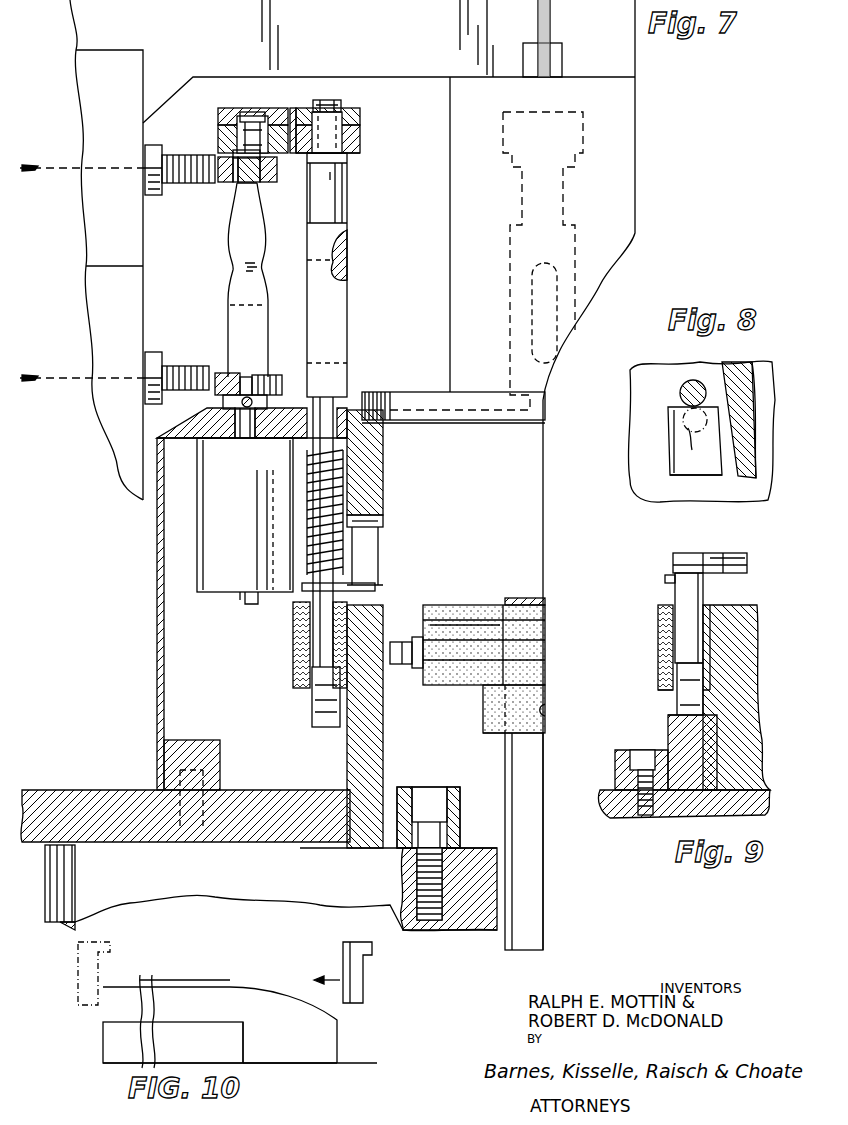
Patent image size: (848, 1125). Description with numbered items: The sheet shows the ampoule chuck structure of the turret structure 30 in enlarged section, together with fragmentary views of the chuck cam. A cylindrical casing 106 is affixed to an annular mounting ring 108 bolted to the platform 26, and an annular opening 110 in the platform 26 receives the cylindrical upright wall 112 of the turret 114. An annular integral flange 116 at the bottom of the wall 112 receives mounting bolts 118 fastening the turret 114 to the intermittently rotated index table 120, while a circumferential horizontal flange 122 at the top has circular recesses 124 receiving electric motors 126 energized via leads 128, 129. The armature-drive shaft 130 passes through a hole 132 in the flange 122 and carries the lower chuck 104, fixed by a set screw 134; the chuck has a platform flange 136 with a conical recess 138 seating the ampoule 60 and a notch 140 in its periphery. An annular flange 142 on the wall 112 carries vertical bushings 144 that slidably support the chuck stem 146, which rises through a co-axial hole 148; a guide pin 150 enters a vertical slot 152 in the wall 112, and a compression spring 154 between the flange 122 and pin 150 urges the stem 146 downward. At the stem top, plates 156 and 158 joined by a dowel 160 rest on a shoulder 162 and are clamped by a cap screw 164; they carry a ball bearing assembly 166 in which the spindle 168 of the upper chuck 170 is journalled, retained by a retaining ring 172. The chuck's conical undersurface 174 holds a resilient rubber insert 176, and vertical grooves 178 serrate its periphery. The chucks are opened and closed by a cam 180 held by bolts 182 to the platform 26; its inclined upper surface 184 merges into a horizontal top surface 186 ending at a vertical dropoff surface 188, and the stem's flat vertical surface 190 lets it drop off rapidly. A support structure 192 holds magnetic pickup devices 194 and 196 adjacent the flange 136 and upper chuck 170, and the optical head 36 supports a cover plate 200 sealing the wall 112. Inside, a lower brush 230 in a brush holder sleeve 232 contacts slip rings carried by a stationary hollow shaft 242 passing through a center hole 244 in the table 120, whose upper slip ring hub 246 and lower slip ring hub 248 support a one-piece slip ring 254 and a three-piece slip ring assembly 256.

In FIG. 7, the platform 26 is at (55, 790).
In FIG. 8, the platform 26 is at (640, 470).
In FIG. 9, the platform 26 is at (668, 812).
In FIG. 7, the cylindrical turret structure 30 is at (156, 650).
In FIG. 7, the optical head 36 is at (636, 172).
In FIG. 7, the ampoule 60 is at (250, 352).
In FIG. 7, the lower chuck 104 is at (222, 401).
In FIG. 7, the cylindrical casing 106 is at (157, 698).
In FIG. 7, the annular mounting ring 108 is at (220, 762).
In FIG. 7, the annular opening 110 is at (347, 792).
In FIG. 7, the cylindrical upright wall 112 is at (374, 758).
In FIG. 8, the cylindrical upright wall 112 is at (748, 478).
In FIG. 9, the cylindrical upright wall 112 is at (738, 640).
In FIG. 7, the turret 114 is at (386, 487).
In FIG. 7, the annular integral flange 116 is at (461, 800).
In FIG. 7, the mounting bolts 118 is at (444, 834).
In FIG. 7, the index table 120 is at (232, 866).
In FIG. 7, the circumferential horizontal flange 122 is at (157, 445).
In FIG. 7, the circular recesses 124 is at (207, 440).
In FIG. 7, the electric motor 126 is at (218, 592).
In FIG. 7, the lead 128 is at (250, 606).
In FIG. 7, the lead 129 is at (243, 606).
In FIG. 7, the armature-drive shaft 130 is at (248, 438).
In FIG. 7, the hole 132 is at (252, 423).
In FIG. 7, the set screw 134 is at (255, 402).
In FIG. 7, the platform flange 136 is at (278, 375).
In FIG. 7, the recess 138 is at (228, 373).
In FIG. 7, the notch 140 is at (240, 382).
In FIG. 7, the annular flange 142 is at (293, 668).
In FIG. 9, the annular flange 142 is at (662, 668).
In FIG. 7, the vertical bushing 144 is at (310, 680).
In FIG. 9, the vertical bushing 144 is at (668, 638).
In FIG. 7, the chuck stem 146 is at (576, 256).
In FIG. 8, the chuck stem 146 is at (682, 392).
In FIG. 9, the chuck stem 146 is at (682, 598).
In FIG. 10, the chuck stem 146 is at (78, 970).
In FIG. 7, the co-axial hole 148 is at (354, 400).
In FIG. 7, the guide pin 150 is at (376, 585).
In FIG. 9, the guide pin 150 is at (740, 573).
In FIG. 7, the vertical slot 152 is at (375, 524).
In FIG. 9, the vertical slot 152 is at (733, 560).
In FIG. 7, the compression spring 154 is at (349, 280).
In FIG. 9, the compression spring 154 is at (675, 578).
In FIG. 7, the lower plate 156 is at (362, 135).
In FIG. 7, the upper plate 158 is at (362, 112).
In FIG. 7, the dowel 160 is at (300, 96).
In FIG. 7, the shoulder 162 is at (352, 153).
In FIG. 7, the cap screw 164 is at (330, 102).
In FIG. 7, the ball bearing assembly 166 is at (218, 138).
In FIG. 7, the spindle 168 is at (249, 114).
In FIG. 7, the upper chuck 170 is at (226, 182).
In FIG. 7, the retaining ring 172 is at (218, 116).
In FIG. 7, the undersurface 174 is at (240, 182).
In FIG. 7, the resilient rubber insert 176 is at (246, 184).
In FIG. 7, the vertical grooves 178 is at (277, 170).
In FIG. 8, the cam 180 is at (718, 498).
In FIG. 9, the cam 180 is at (678, 735).
In FIG. 10, the cam 180 is at (312, 1063).
In FIG. 9, the bolts 182 is at (636, 762).
In FIG. 10, the upper surface 184 is at (296, 976).
In FIG. 9, the horizontal top surface 186 is at (672, 718).
In FIG. 10, the horizontal top surface 186 is at (158, 987).
In FIG. 10, the vertical dropoff surface 188 is at (103, 1020).
In FIG. 7, the vertical surface 190 is at (312, 716).
In FIG. 8, the vertical surface 190 is at (699, 441).
In FIG. 9, the vertical surface 190 is at (680, 694).
In FIG. 10, the vertical surface 190 is at (98, 970).
In FIG. 7, the support structure 192 is at (98, 322).
In FIG. 7, the magnetic pickup device 194 is at (145, 368).
In FIG. 7, the magnetic pickup device 196 is at (145, 160).
In FIG. 7, the cover plate 200 is at (445, 423).
In FIG. 7, the lower brush 230 is at (420, 668).
In FIG. 7, the brush holder sleeve 232 is at (403, 665).
In FIG. 7, the hollow shaft 242 is at (543, 945).
In FIG. 7, the center hole 244 is at (497, 938).
In FIG. 7, the upper slip ring hub 246 is at (487, 605).
In FIG. 7, the lower slip ring hub 248 is at (490, 733).
In FIG. 7, the one-piece slip ring 254 is at (463, 625).
In FIG. 7, the three-piece slip ring assembly 256 is at (458, 665).